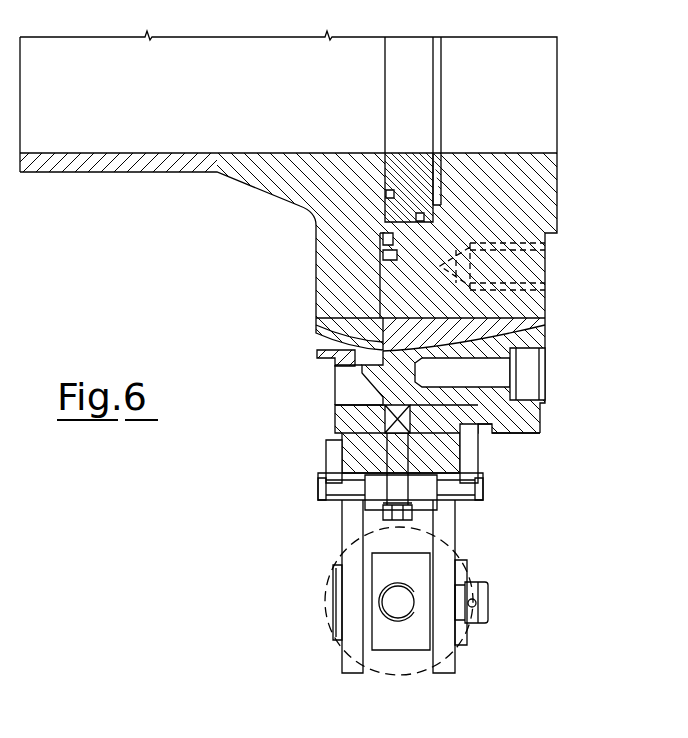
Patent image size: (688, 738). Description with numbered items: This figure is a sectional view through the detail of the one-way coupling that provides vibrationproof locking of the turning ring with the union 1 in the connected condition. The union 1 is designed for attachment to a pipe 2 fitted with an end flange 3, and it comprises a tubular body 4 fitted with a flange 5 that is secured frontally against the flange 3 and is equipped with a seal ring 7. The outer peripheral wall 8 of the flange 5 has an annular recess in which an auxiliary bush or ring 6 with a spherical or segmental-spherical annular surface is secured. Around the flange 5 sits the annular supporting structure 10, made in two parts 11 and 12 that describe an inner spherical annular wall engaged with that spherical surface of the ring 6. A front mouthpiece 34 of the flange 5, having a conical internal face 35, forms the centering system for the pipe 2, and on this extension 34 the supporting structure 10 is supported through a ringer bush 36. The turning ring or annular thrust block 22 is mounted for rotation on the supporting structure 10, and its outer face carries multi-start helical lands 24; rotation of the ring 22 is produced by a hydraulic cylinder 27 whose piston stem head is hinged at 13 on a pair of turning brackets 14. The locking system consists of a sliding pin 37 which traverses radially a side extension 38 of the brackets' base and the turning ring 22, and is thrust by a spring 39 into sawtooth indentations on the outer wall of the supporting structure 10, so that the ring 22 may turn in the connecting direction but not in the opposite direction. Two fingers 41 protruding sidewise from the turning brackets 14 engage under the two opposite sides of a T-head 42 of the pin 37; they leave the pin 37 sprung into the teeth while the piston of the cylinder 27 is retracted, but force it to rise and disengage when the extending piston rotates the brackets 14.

The union 1 is at (558, 192).
The pipe 2 is at (168, 172).
The end flange 3 is at (320, 210).
The tubular body 4 is at (497, 168).
The flange 5 is at (522, 298).
The auxiliary bush or ring 6 is at (520, 332).
The seal ring 7 is at (405, 165).
The outer peripheral wall 8 is at (390, 350).
The annular supporting structure 10 is at (548, 418).
The first part of supporting structure 11 is at (355, 383).
The second part of supporting structure 12 is at (495, 434).
The hinge of piston stem head 13 is at (484, 607).
The turning brackets 14 is at (355, 653).
The turning ring or annular thrust block 22 is at (480, 430).
The multi-start screw threads or helical lands 24 is at (487, 439).
The hydraulic cylinder 27 is at (410, 635).
The front mouthpiece 34 is at (322, 340).
The conical internal face 35 is at (320, 318).
The ringer bush 36 is at (318, 358).
The sliding pin 37 is at (345, 460).
The side extension 38 is at (330, 475).
The spring 39 is at (345, 432).
The fingers 41 is at (335, 455).
The T-head 42 is at (335, 498).